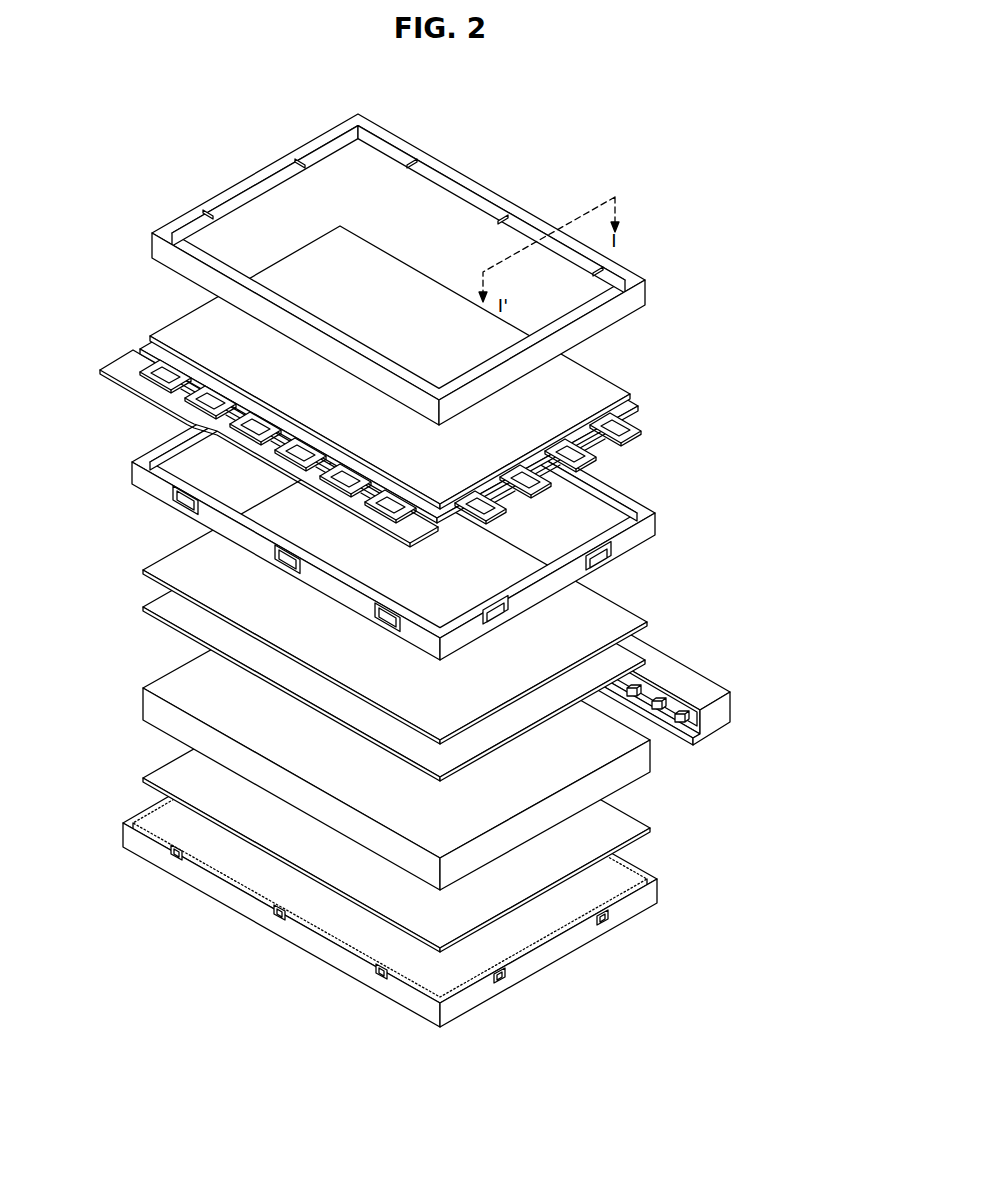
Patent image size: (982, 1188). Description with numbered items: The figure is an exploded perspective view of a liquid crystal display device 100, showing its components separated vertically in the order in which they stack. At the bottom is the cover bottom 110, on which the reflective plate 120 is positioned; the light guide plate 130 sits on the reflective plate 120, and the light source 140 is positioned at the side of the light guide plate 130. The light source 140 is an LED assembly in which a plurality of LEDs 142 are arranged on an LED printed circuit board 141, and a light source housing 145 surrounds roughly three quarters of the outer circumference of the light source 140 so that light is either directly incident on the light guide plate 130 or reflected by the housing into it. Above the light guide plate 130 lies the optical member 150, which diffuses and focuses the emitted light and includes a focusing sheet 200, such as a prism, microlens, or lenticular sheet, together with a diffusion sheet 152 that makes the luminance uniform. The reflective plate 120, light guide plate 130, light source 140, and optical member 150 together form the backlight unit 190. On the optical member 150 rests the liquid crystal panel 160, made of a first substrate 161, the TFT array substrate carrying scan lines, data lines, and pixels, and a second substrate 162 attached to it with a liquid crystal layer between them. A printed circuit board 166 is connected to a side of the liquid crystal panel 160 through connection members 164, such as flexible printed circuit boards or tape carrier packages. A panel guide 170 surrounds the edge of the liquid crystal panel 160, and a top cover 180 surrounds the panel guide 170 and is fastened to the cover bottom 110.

The liquid crystal display device 100 is at (604, 140).
The cover bottom 110 is at (652, 890).
The reflective plate 120 is at (652, 829).
The light guide plate 130 is at (628, 772).
The light source 140 is at (689, 701).
The LED printed circuit board 141 is at (688, 716).
The LEDs 142 is at (708, 720).
The light source housing 145 is at (717, 742).
The optical member 150 is at (454, 617).
The diffusion sheet 152 is at (648, 622).
The liquid crystal panel 160 is at (325, 387).
The first substrate 161 is at (150, 348).
The second substrate 162 is at (187, 322).
The connection member 164 is at (147, 367).
The printed circuit board 166 is at (135, 377).
The panel guide 170 is at (655, 522).
The top cover 180 is at (644, 281).
The backlight unit 190 is at (817, 613).
The focusing sheet 200 is at (646, 659).